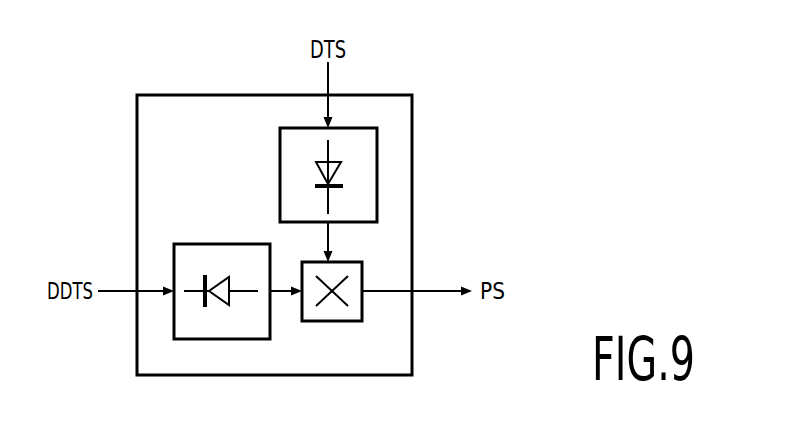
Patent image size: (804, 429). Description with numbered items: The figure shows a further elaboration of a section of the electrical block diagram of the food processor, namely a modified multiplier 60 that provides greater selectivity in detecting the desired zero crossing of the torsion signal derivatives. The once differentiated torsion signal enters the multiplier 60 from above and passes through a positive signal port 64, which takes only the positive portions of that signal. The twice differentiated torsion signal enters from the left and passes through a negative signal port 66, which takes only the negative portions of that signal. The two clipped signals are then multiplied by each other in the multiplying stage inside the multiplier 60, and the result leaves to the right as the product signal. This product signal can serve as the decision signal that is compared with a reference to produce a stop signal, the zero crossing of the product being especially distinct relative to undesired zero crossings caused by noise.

The multiplier 60 is at (413, 125).
The positive signal port 64 is at (280, 162).
The negative signal port 66 is at (208, 243).